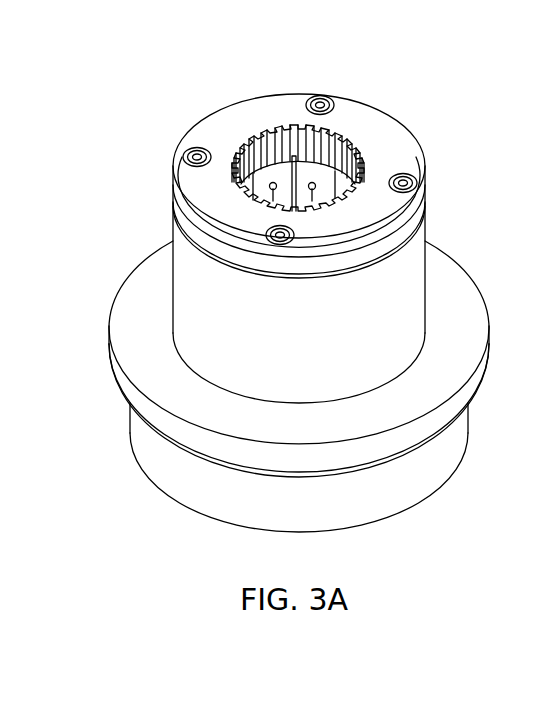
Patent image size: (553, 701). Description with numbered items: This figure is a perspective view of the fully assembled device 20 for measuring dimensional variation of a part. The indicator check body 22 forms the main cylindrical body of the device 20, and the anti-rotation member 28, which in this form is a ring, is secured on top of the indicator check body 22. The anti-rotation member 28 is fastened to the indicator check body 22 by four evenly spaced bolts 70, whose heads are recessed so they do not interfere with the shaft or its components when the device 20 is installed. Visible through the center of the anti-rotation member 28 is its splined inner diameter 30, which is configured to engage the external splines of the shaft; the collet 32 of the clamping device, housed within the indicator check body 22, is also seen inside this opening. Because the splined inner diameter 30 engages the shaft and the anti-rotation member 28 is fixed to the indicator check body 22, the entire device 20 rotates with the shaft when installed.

The device 20 is at (313, 283).
The indicator check body 22 is at (198, 275).
The anti-rotation member 28 is at (205, 190).
The splined inner diameter 30 is at (341, 140).
The collet 32 is at (309, 147).
The bolts 70 is at (417, 182).